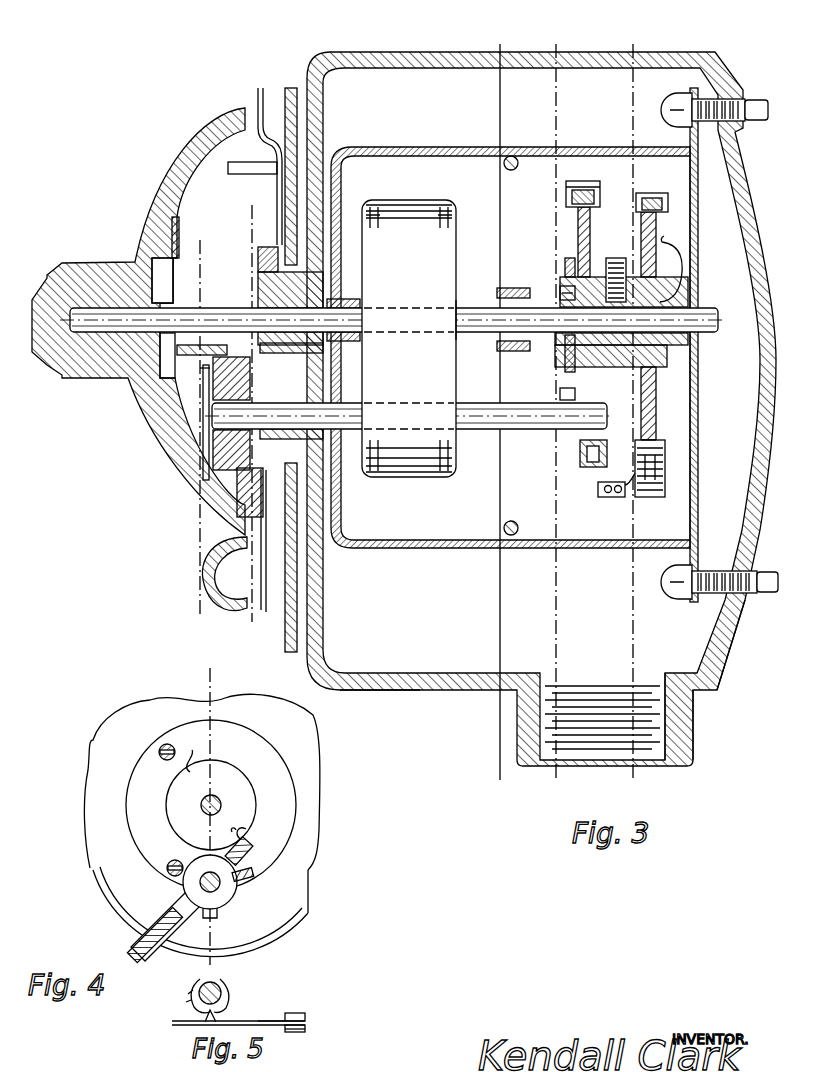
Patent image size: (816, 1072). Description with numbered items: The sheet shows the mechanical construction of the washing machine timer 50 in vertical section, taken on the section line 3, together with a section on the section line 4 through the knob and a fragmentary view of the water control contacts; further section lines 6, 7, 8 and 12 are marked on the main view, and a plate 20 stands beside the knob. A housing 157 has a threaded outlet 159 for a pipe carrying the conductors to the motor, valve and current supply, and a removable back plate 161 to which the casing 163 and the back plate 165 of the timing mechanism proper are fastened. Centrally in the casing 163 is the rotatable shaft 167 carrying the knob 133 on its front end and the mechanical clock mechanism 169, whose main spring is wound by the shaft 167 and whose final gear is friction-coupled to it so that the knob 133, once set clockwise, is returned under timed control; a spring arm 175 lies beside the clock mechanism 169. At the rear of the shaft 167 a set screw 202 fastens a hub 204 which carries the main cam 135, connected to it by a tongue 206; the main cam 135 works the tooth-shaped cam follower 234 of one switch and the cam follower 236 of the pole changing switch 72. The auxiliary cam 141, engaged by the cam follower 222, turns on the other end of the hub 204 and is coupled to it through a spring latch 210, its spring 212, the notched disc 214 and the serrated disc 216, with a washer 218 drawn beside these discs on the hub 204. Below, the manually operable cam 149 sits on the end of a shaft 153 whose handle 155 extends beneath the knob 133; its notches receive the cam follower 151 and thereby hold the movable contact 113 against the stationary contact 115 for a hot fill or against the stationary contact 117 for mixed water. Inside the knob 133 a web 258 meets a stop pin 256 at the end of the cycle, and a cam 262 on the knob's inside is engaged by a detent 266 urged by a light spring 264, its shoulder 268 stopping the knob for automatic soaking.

In FIG. 3, the housing assembly 50 is at (447, 676).
In FIG. 3, the housing 157 is at (383, 690).
In FIG. 3, the removable back plate 161 is at (733, 634).
In FIG. 3, the threaded outlet 159 is at (660, 760).
In FIG. 3, the casing 163 is at (605, 548).
In FIG. 3, the back plate of the timing mechanism 165 is at (700, 415).
In FIG. 3, the rotatable shaft 167 is at (720, 319).
In FIG. 4, the rotatable shaft 167 is at (216, 800).
In FIG. 3, the mechanical clock mechanism 169 is at (415, 204).
In FIG. 3, the knob 133 is at (165, 462).
In FIG. 4, the knob 133 is at (302, 877).
In FIG. 3, the main cam 135 is at (660, 391).
In FIG. 3, the auxiliary cam 141 is at (578, 228).
In FIG. 3, the manually operable cam 149 is at (582, 448).
In FIG. 5, the manually operable cam 149 is at (196, 995).
In FIG. 3, the cam follower 151 is at (596, 488).
In FIG. 5, the cam follower 151 is at (185, 1025).
In FIG. 3, the shaft 153 is at (472, 437).
In FIG. 4, the shaft 153 is at (235, 892).
In FIG. 5, the shaft 153 is at (228, 993).
In FIG. 3, the handle 155 is at (213, 577).
In FIG. 4, the handle 155 is at (137, 940).
In FIG. 3, the spring arm 175 is at (518, 352).
In FIG. 3, the set screw 202 is at (612, 260).
In FIG. 3, the hub 204 is at (623, 368).
In FIG. 3, the tongue 206 is at (668, 248).
In FIG. 3, the spring latch 210 is at (558, 408).
In FIG. 3, the spring 212 is at (560, 393).
In FIG. 3, the notched disc 214 is at (568, 264).
In FIG. 3, the serrated disc 216 is at (565, 372).
In FIG. 3, the washer 218 is at (562, 290).
In FIG. 3, the cam follower 222 is at (600, 178).
In FIG. 3, the cam follower 234 is at (655, 196).
In FIG. 3, the cam follower 236 is at (652, 440).
In FIG. 3, the stop pin 256 is at (252, 158).
In FIG. 3, the web 258 is at (217, 175).
In FIG. 3, the cam 262 is at (180, 277).
In FIG. 4, the cam 262 is at (193, 750).
In FIG. 3, the light spring 264 is at (205, 382).
In FIG. 3, the detent 266 is at (235, 350).
In FIG. 4, the detent 266 is at (230, 850).
In FIG. 4, the shoulder 268 is at (244, 832).
In FIG. 3, the pole changing switch 72 is at (650, 488).
In FIG. 5, the movable contact 113 is at (265, 1021).
In FIG. 5, the stationary contact 115 is at (292, 1032).
In FIG. 5, the stationary contact 117 is at (292, 1011).
In FIG. 3, the partition plate 20 is at (266, 610).
In FIG. 4, the section line 3— 3 is at (229, 971).
In FIG. 3, the section line 4— 4 is at (238, 625).
In FIG. 3, the section line 6— 6 is at (514, 785).
In FIG. 3, the section line 7— 7 is at (570, 785).
In FIG. 3, the section line 8— 8 is at (647, 785).
In FIG. 3, the section line 12— 12 is at (216, 618).